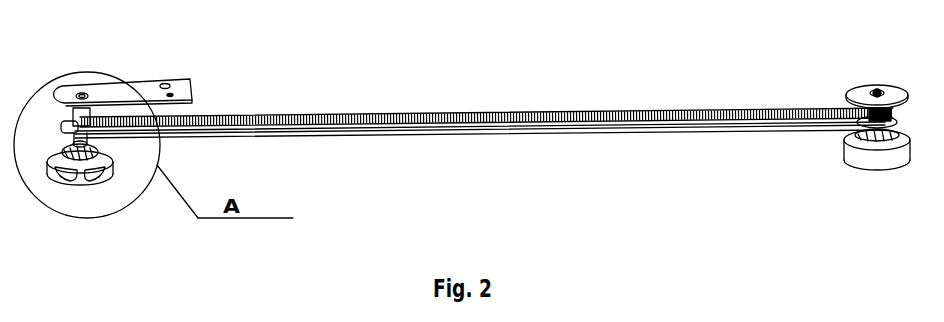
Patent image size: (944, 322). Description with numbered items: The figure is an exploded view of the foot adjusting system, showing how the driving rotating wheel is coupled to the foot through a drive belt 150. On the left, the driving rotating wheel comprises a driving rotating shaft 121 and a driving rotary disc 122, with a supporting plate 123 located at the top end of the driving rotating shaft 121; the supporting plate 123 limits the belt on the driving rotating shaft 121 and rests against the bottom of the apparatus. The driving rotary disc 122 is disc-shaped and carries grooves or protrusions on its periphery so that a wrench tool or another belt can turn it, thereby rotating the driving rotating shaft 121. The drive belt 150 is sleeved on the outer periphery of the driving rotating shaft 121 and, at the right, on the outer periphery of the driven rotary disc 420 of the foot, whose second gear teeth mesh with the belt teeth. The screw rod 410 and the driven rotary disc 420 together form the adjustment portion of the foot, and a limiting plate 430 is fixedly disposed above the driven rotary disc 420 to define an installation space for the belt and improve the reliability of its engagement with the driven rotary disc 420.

The driving rotating shaft 121 is at (90, 118).
The driving rotary disc 122 is at (100, 172).
The supporting plate 123 is at (177, 88).
The drive belt 150 is at (442, 112).
The screw rod 410 is at (875, 88).
The driven rotary disc 420 is at (867, 147).
The limiting plate 430 is at (850, 93).